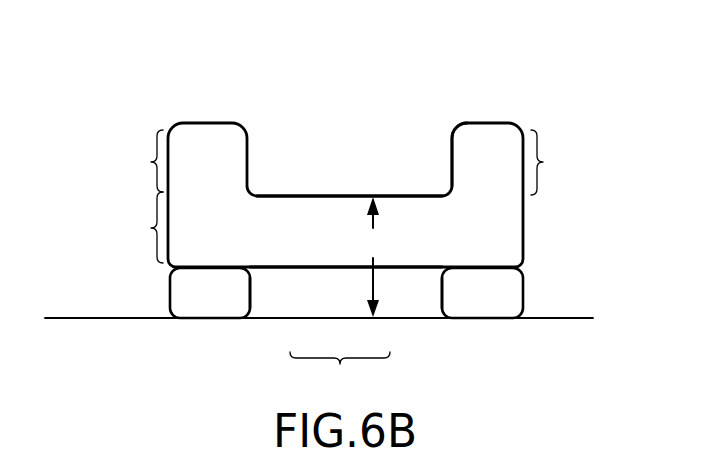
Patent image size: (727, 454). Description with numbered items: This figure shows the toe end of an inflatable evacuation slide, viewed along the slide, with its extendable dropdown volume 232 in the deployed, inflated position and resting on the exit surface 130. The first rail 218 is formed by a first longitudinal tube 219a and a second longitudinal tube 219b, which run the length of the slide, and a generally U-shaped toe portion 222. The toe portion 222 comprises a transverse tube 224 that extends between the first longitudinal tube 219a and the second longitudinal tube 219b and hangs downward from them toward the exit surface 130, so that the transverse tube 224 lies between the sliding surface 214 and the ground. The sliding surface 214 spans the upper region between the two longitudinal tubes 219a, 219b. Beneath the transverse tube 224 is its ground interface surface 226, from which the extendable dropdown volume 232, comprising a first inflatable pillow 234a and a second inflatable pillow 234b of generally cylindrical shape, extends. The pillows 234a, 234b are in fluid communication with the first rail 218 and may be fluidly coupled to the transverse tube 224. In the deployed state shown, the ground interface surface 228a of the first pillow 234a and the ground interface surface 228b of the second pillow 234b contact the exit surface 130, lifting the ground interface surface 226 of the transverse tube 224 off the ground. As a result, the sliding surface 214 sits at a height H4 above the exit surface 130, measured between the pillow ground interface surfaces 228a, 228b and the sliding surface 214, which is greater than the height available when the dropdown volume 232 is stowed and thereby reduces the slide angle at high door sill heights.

The exit surface 130 is at (55, 317).
The toe portion 222 is at (127, 120).
The first longitudinal tube 219a is at (563, 162).
The second longitudinal tube 219b is at (130, 161).
The transverse tube 224 is at (136, 227).
The sliding surface 214 is at (333, 195).
The first rail 218 is at (453, 133).
The ground interface surface 226 is at (307, 268).
The height H4 is at (370, 257).
The ground interface surface 228a is at (485, 318).
The ground interface surface 228b is at (207, 318).
The first inflatable pillow 234a is at (247, 290).
The second inflatable pillow 234b is at (448, 300).
The extendable dropdown volume 232 is at (340, 377).